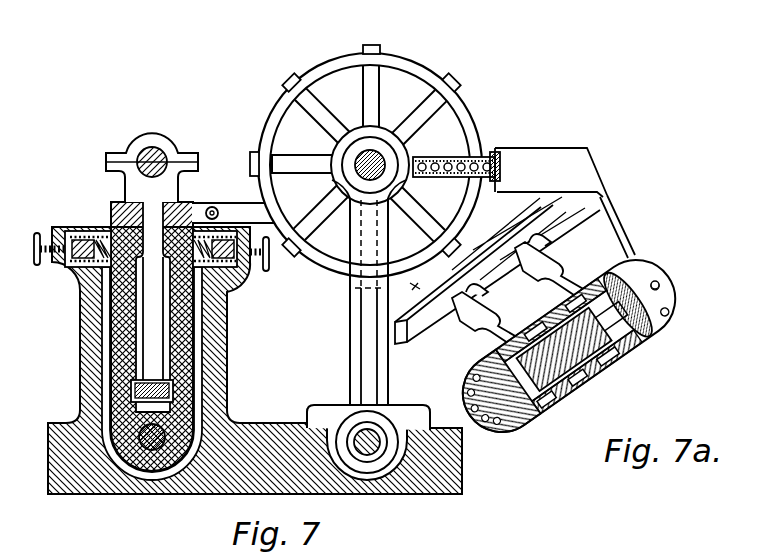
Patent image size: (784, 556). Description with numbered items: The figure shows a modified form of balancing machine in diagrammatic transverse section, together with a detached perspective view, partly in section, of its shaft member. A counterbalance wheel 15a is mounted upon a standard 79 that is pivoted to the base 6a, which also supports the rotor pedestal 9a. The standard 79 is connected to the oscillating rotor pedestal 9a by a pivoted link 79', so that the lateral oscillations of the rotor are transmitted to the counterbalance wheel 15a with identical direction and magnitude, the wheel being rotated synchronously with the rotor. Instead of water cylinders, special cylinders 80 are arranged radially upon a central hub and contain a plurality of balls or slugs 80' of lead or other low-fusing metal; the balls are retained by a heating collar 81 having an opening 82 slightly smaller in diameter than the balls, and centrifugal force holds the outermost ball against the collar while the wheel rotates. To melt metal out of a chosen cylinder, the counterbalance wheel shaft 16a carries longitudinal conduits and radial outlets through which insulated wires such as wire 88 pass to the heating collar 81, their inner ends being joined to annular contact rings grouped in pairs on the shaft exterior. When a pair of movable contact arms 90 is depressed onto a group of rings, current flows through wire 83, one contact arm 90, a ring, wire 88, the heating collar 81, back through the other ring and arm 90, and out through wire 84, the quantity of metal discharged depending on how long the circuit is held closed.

In FIG. 7, the base 6a is at (100, 482).
In FIG. 7, the rotor pedestal 9a is at (112, 335).
In FIG. 7, the counterbalance wheel 15a is at (393, 58).
In FIG. 7, the counterbalance wheel shaft 16a is at (386, 165).
In FIG. 7A, the counterbalance wheel shaft 16a is at (668, 298).
In FIG. 7, the standard 79 is at (366, 326).
In FIG. 7, the pivoted link 79' is at (307, 262).
In FIG. 7, the cylinders 80 is at (358, 129).
In FIG. 7, the balls or slugs 80' is at (472, 130).
In FIG. 7, the heating collar 81 is at (503, 155).
In FIG. 7, the opening 82 is at (503, 168).
In FIG. 7, the wire 83 is at (518, 219).
In FIG. 7, the wire 84 is at (537, 230).
In FIG. 7, the wire 88 is at (614, 225).
In FIG. 7, the contact arm 90 is at (500, 322).